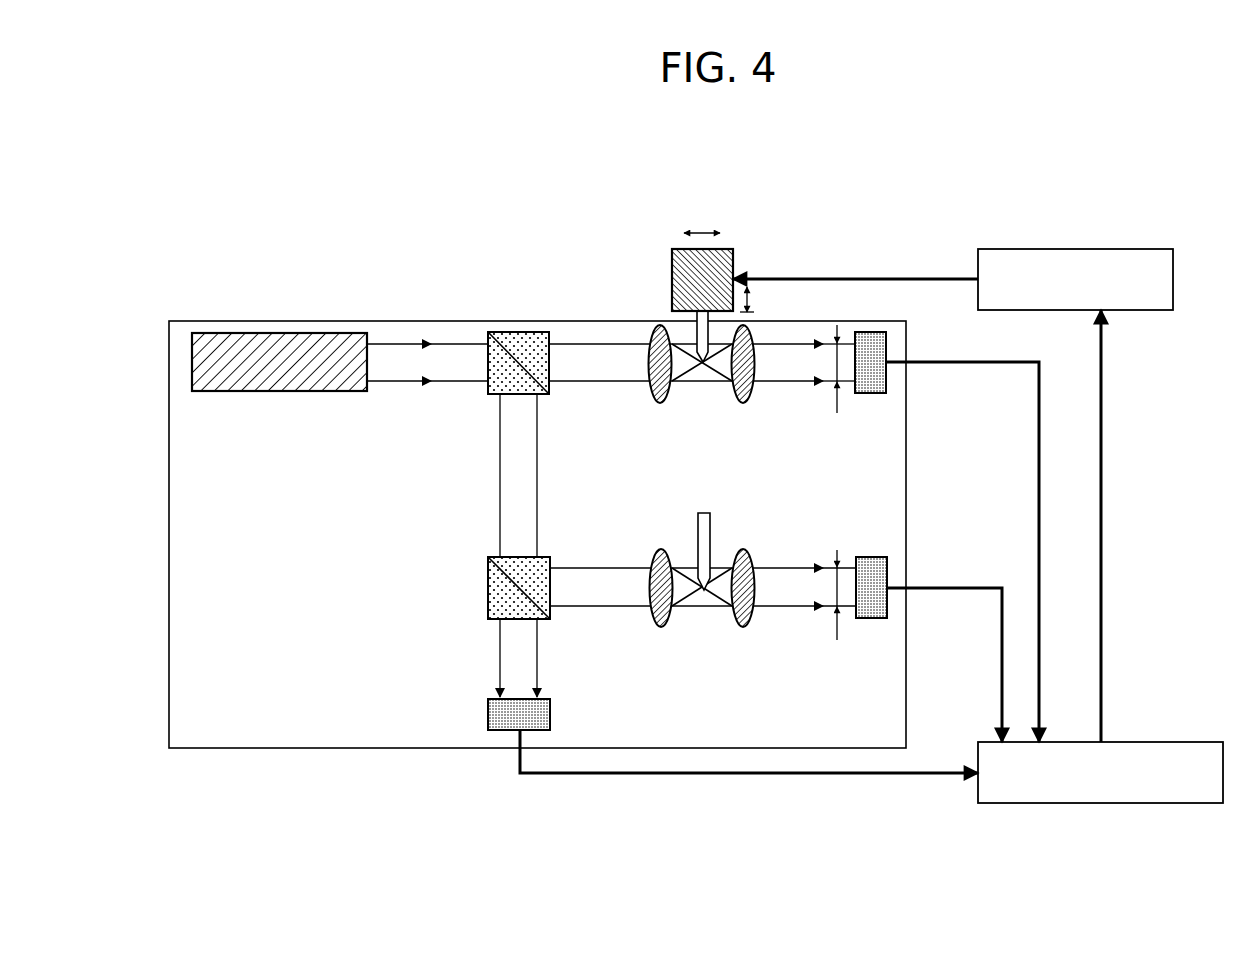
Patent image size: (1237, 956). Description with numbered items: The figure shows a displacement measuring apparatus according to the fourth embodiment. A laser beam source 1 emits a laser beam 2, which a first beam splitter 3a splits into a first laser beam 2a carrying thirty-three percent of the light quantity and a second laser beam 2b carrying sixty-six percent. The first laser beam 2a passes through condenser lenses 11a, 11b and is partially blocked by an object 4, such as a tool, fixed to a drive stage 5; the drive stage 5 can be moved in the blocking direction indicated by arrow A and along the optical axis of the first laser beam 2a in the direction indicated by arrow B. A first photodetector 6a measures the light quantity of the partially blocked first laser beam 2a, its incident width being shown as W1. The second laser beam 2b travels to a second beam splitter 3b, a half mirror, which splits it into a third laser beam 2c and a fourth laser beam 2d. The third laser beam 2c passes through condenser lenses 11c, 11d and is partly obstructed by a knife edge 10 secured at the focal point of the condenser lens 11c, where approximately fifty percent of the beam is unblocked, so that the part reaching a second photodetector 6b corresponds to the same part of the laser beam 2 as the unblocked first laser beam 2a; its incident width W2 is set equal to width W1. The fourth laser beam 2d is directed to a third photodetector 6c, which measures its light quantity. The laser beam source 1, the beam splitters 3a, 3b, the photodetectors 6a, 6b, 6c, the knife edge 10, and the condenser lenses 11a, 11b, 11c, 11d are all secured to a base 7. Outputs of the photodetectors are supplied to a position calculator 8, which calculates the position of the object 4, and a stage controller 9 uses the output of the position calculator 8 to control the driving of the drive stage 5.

The laser beam source 1 is at (272, 332).
The laser beam 2 is at (388, 384).
The first laser beam 2a is at (601, 384).
The second laser beam 2b is at (500, 463).
The third laser beam 2c is at (601, 608).
The fourth laser beam 2d is at (500, 643).
The first beam splitter 3a is at (527, 331).
The second beam splitter 3b is at (488, 574).
The object 4 is at (697, 334).
The drive stage 5 is at (672, 262).
The first photodetector 6a is at (872, 395).
The second photodetector 6b is at (871, 619).
The third photodetector 6c is at (550, 716).
The base 7 is at (367, 320).
The position calculator 8 is at (1177, 741).
The stage controller 9 is at (1175, 279).
The knife edge 10 is at (698, 529).
The condenser lens 11a is at (661, 404).
The condenser lens 11b is at (743, 404).
The condenser lens 11c is at (662, 628).
The condenser lens 11d is at (743, 628).
The arrow A is at (756, 302).
The arrow B is at (702, 214).
The width W1 is at (841, 394).
The width W2 is at (839, 597).